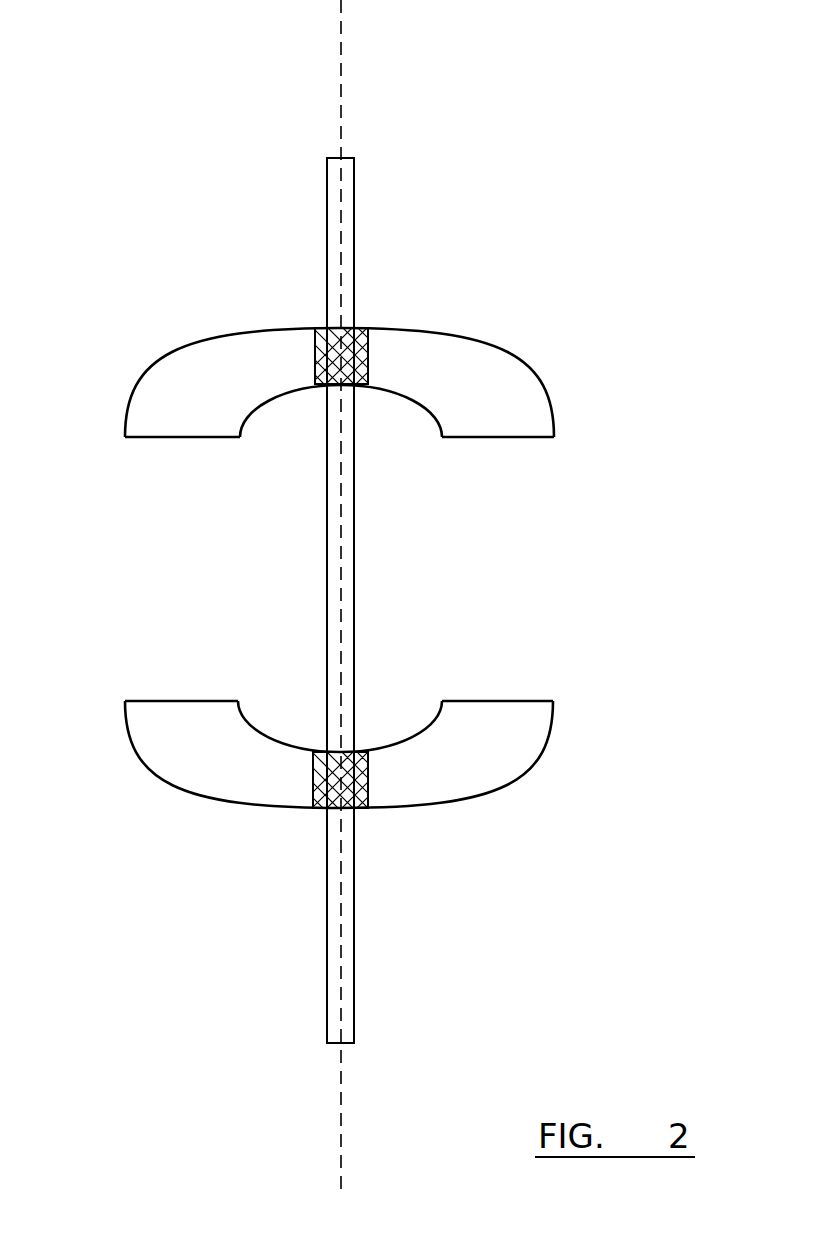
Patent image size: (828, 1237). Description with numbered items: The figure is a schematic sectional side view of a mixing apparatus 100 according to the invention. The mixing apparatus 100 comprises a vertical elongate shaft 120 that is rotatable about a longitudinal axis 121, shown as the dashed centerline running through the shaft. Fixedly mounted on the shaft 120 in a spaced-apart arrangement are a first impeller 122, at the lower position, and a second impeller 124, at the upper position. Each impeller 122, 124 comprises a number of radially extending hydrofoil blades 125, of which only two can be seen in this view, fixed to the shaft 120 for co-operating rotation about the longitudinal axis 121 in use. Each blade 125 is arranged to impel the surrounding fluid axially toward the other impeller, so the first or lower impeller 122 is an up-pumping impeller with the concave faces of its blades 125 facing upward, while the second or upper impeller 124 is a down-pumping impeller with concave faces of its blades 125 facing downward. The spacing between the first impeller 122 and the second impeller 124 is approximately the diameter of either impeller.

The mixing apparatus 100 is at (600, 268).
The vertical elongate shaft 120 is at (350, 200).
The longitudinal axis 121 is at (337, 55).
The first impeller 122 is at (478, 765).
The second impeller 124 is at (500, 400).
The hydrofoil blades 125 is at (198, 423).